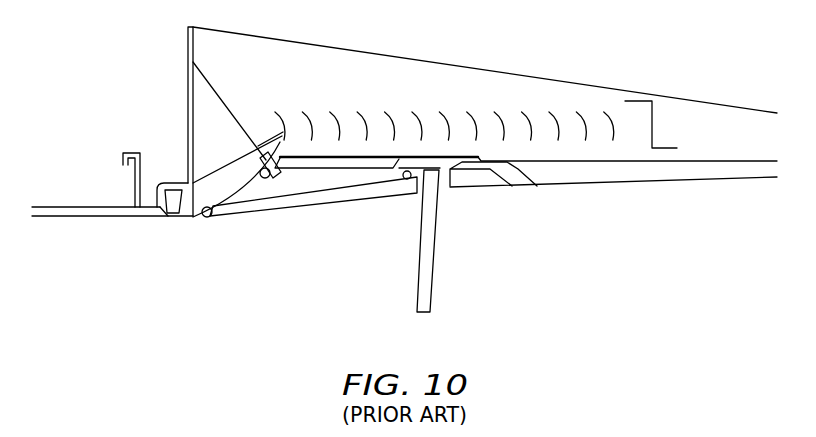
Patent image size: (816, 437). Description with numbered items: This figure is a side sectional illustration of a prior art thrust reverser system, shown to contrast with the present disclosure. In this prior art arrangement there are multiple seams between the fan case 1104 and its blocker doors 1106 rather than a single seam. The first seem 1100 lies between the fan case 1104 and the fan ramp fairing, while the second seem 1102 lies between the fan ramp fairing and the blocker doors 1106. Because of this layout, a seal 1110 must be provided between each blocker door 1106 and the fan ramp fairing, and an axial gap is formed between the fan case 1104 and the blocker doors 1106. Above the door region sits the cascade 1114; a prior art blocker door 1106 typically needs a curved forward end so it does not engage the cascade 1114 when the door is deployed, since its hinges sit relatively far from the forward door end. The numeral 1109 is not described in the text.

The first seem 1100 is at (163, 220).
The second seem 1102 is at (196, 220).
The fan case 1104 is at (85, 218).
The blocker door 1106 is at (295, 210).
The seal 1109 is at (178, 190).
The seal 1110 is at (212, 217).
The cascade 1114 is at (498, 113).